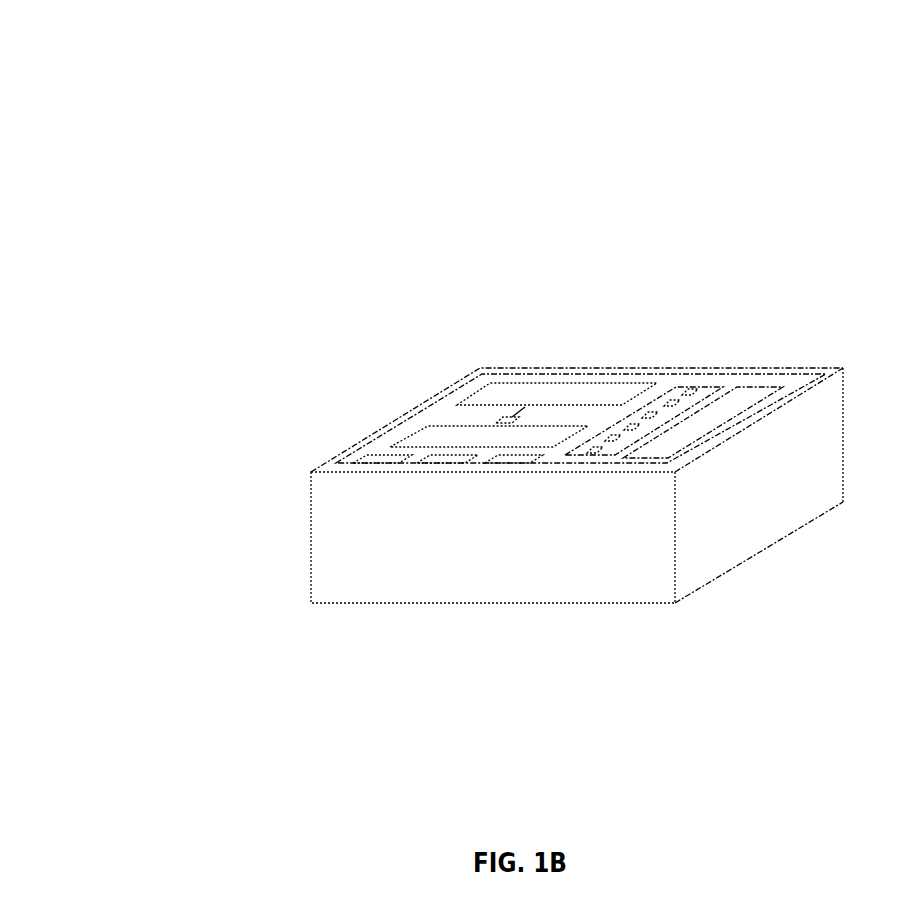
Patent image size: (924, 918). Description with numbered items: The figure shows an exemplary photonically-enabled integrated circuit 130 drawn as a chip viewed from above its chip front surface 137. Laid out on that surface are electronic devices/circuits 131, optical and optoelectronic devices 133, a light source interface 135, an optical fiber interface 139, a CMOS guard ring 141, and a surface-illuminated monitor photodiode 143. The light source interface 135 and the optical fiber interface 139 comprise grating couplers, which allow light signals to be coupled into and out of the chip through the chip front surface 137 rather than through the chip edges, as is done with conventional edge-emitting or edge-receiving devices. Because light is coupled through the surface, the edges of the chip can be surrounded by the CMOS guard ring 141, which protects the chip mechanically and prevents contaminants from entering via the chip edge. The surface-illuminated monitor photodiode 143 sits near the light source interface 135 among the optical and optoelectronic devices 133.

The photonically-enabled integrated circuit 130 is at (162, 108).
The electronic devices/circuits 131 is at (513, 460).
The optical and optoelectronic devices 133 is at (555, 400).
The light source interface 135 is at (527, 408).
The chip front surface 137 is at (610, 378).
The optical fiber interface 139 is at (698, 387).
The CMOS guard ring 141 is at (827, 375).
The surface-illuminated monitor photodiode 143 is at (497, 420).